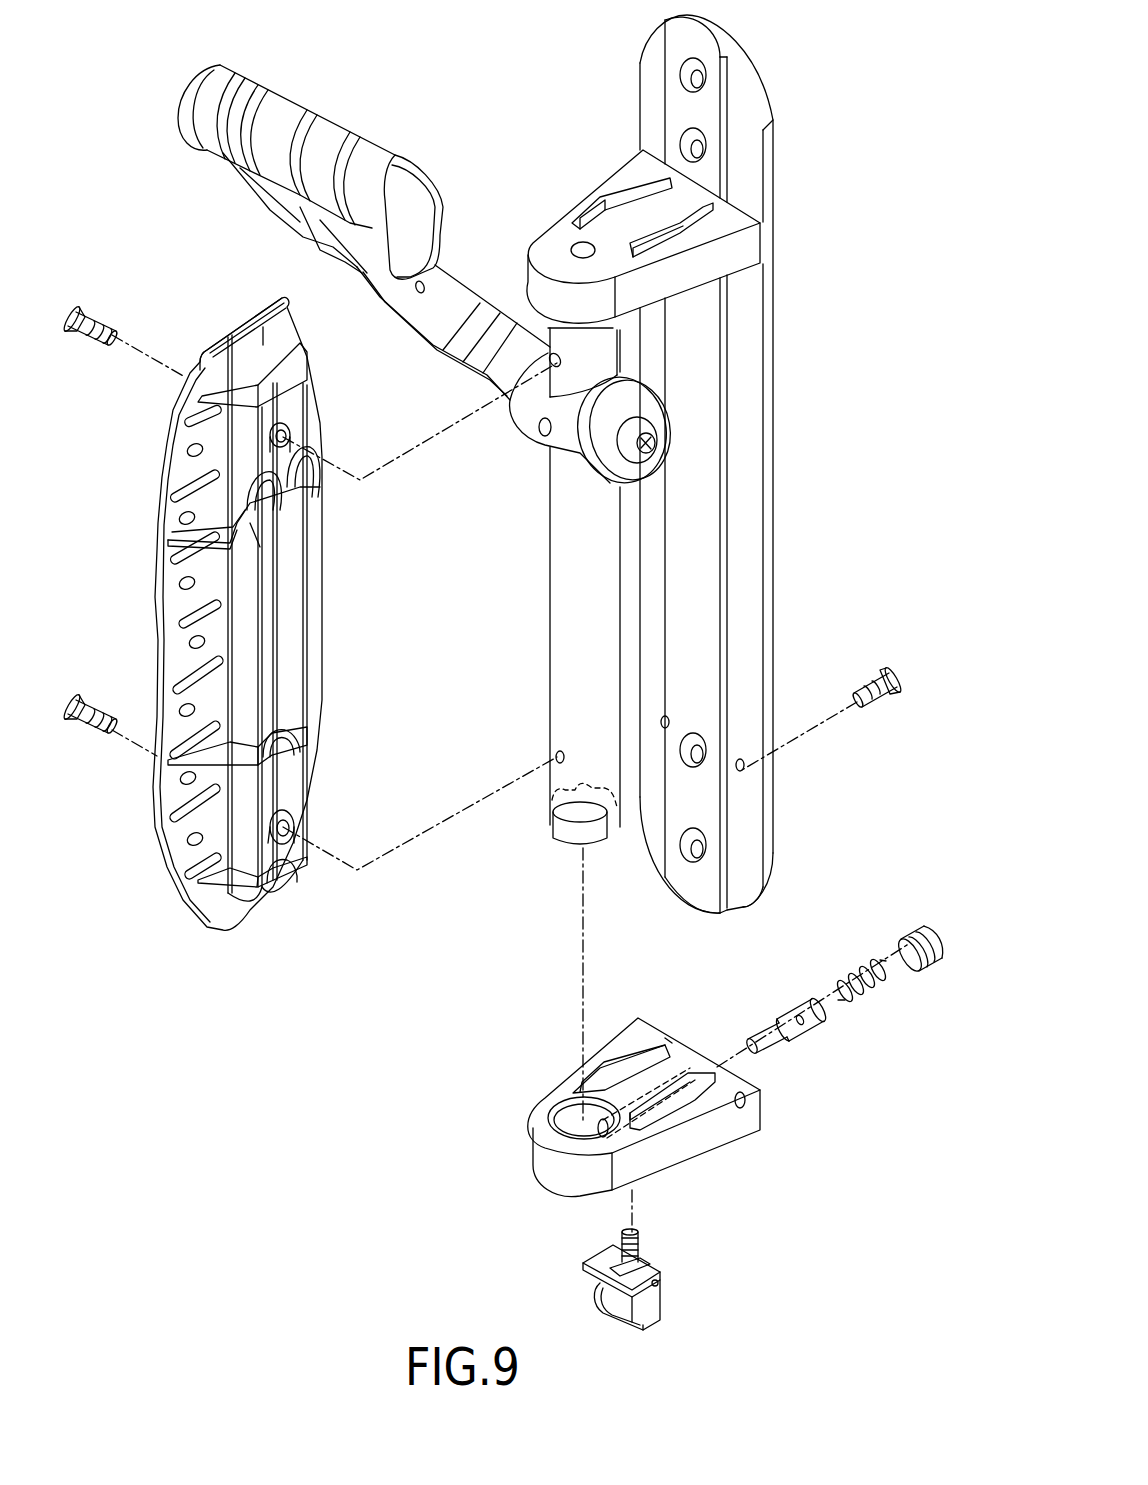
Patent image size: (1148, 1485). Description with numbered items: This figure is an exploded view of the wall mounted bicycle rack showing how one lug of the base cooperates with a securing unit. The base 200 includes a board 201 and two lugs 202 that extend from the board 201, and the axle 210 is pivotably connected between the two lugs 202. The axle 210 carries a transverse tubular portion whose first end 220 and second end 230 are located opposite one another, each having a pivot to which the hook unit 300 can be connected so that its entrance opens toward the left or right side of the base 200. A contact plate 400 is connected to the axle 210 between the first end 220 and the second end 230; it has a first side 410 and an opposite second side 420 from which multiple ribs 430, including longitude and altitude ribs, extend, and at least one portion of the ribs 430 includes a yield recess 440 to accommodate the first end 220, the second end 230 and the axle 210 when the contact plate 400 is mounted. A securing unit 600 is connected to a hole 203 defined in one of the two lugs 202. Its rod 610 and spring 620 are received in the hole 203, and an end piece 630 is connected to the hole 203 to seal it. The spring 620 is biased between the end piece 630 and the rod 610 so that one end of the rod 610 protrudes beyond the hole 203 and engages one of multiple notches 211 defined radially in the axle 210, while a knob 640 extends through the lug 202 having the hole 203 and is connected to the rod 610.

The base 200 is at (651, 621).
The board 201 is at (770, 170).
The lugs 202 is at (590, 648).
The hole 203 is at (630, 1132).
The axle 210 is at (539, 724).
The notches 211 is at (603, 793).
The first end 220 is at (577, 457).
The second end 230 is at (502, 417).
The hook unit 300 is at (380, 143).
The contact plate 400 is at (309, 621).
The first side 410 is at (232, 335).
The second side 420 is at (265, 333).
The ribs 430 is at (267, 527).
The yield recess 440 is at (257, 473).
The securing unit 600 is at (763, 1080).
The rod 610 is at (787, 1010).
The spring 620 is at (853, 970).
The end piece 630 is at (917, 927).
The knob 640 is at (657, 1300).